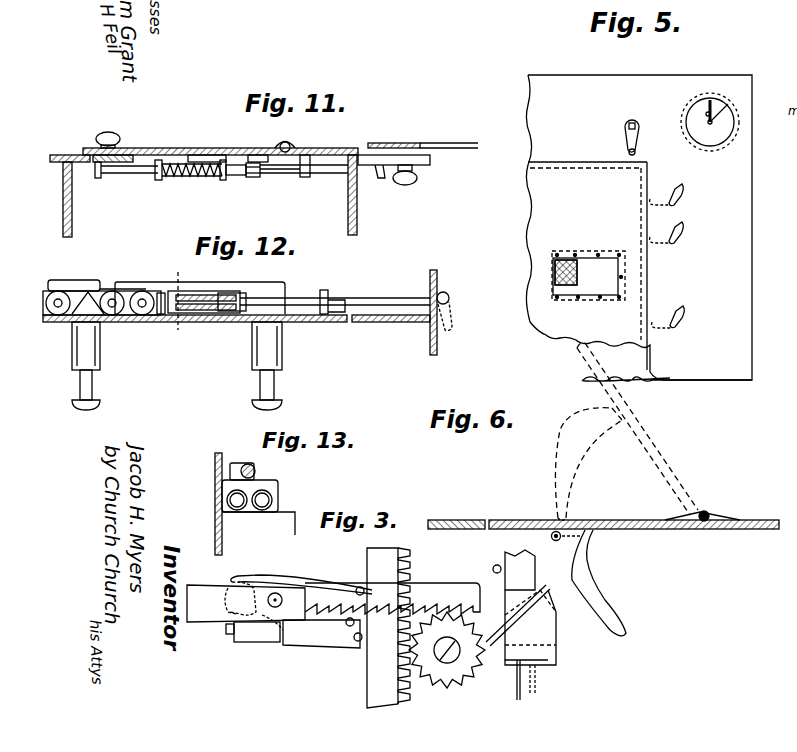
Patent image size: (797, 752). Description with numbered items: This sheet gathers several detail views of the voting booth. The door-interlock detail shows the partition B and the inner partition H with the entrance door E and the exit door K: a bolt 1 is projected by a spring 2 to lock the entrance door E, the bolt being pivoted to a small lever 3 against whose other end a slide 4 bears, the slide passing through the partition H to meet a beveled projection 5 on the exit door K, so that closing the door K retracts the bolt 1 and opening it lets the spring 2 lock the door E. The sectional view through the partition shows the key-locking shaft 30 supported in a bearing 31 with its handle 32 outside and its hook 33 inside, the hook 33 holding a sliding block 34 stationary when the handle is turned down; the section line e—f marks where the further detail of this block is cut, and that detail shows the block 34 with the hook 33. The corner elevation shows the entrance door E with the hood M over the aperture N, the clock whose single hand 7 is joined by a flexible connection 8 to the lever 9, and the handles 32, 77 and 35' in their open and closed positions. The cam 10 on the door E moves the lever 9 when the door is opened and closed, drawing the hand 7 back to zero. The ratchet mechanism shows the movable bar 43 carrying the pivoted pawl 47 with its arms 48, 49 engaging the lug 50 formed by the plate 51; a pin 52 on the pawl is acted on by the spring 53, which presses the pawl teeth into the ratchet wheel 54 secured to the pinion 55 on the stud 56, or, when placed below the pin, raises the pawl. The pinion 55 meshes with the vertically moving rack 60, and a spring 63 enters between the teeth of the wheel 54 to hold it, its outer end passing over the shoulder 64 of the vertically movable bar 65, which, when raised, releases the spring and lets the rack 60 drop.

In FIG. 11, the entrance door E is at (175, 150).
In FIG. 5, the entrance door E is at (587, 266).
In FIG. 6, the entrance door E is at (517, 522).
In FIG. 11, the exit door K is at (438, 146).
In FIG. 11, the partition B is at (70, 199).
In FIG. 11, the partition H is at (364, 224).
In FIG. 11, the bolt 1 is at (135, 173).
In FIG. 11, the spring 2 is at (187, 176).
In FIG. 11, the lever 3 is at (254, 177).
In FIG. 11, the slide 4 is at (330, 166).
In FIG. 11, the beveled projection 5 is at (384, 179).
In FIG. 12, the shaft 30 is at (378, 303).
In FIG. 12, the bearing 31 is at (328, 300).
In FIG. 12, the handle 32 is at (450, 297).
In FIG. 5, the handle 32 is at (680, 196).
In FIG. 12, the hook 33 is at (170, 314).
In FIG. 12, the sliding block 34 is at (155, 314).
In FIG. 12, the section line e is at (179, 292).
In FIG. 12, the section line f is at (179, 347).
In FIG. 5, the hood M is at (588, 275).
In FIG. 5, the aperture N is at (573, 286).
In FIG. 5, the hand 7 is at (724, 108).
In FIG. 5, the flexible connection 8 is at (694, 110).
In FIG. 5, the handle 77 is at (679, 234).
In FIG. 5, the handle 35' is at (681, 311).
In FIG. 6, the lever 9 is at (553, 539).
In FIG. 3, the cam 10 is at (594, 583).
In FIG. 3, the movable bar 43 is at (246, 603).
In FIG. 3, the pawl 47 is at (440, 592).
In FIG. 3, the arm 48 is at (220, 622).
In FIG. 3, the arm 49 is at (285, 632).
In FIG. 3, the lug 50 is at (230, 634).
In FIG. 3, the plate 51 is at (322, 633).
In FIG. 3, the pin 52 is at (365, 588).
In FIG. 3, the spring 53 is at (301, 585).
In FIG. 3, the ratchet wheel 54 is at (447, 650).
In FIG. 3, the pinion 55 is at (476, 702).
In FIG. 3, the stud 56 is at (455, 656).
In FIG. 3, the rack 60 is at (388, 628).
In FIG. 3, the spring 63 is at (518, 605).
In FIG. 3, the shoulder 64 is at (556, 610).
In FIG. 3, the bar 65 is at (520, 605).